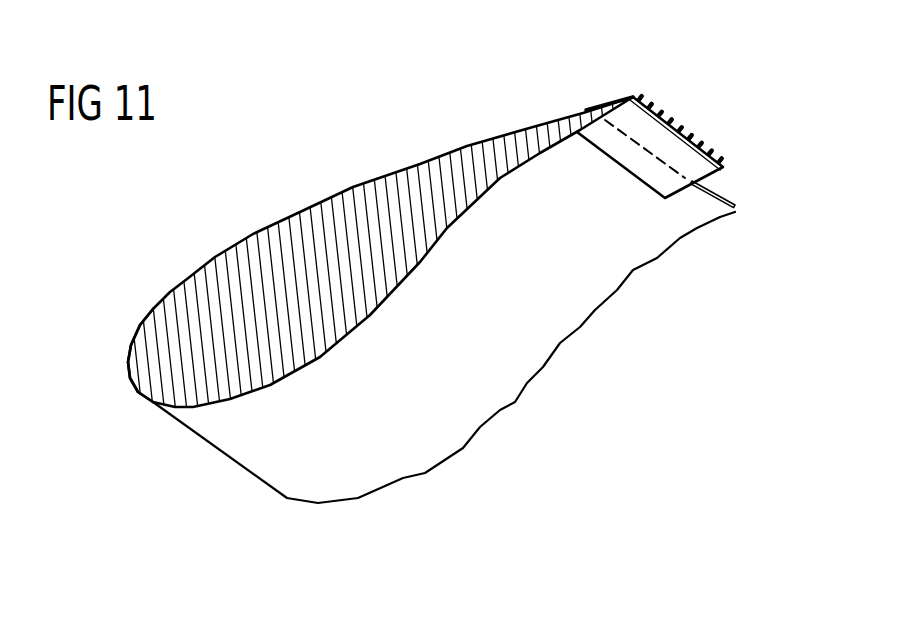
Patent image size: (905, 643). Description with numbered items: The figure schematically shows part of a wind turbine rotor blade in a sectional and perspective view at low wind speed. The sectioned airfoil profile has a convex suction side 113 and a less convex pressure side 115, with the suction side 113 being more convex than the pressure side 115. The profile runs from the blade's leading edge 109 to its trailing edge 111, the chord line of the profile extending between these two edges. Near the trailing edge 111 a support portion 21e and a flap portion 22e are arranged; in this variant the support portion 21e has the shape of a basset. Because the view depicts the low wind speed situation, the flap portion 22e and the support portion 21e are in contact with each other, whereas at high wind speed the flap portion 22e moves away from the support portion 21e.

The suction side 113 is at (239, 245).
The leading edge 109 is at (128, 375).
The pressure side 115 is at (277, 439).
The support portion 21e is at (610, 107).
The flap portion 22e is at (648, 142).
The trailing edge 111 is at (731, 201).